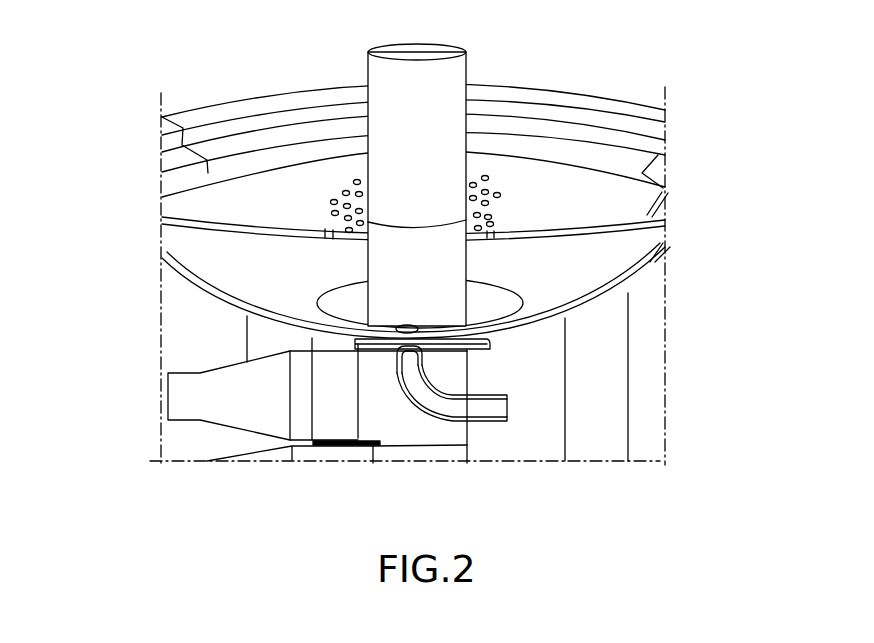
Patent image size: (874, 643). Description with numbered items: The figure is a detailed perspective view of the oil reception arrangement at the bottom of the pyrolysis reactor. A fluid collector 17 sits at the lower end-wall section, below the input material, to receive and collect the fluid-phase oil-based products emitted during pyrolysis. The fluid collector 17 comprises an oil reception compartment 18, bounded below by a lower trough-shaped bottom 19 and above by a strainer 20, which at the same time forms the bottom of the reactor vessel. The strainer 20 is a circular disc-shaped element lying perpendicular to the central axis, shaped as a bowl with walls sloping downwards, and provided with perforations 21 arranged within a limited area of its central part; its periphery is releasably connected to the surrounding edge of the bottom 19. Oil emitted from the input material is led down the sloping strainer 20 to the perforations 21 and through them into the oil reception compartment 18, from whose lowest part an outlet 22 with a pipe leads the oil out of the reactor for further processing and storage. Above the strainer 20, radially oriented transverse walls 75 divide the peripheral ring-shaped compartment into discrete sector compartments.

The fluid collector 17 is at (112, 315).
The oil reception compartment 18 is at (577, 278).
The lower trough-shaped bottom 19 is at (640, 283).
The strainer 20 is at (595, 215).
The perforations 21 is at (498, 207).
The outlet 22 is at (415, 380).
The transverse walls 75 is at (183, 130).